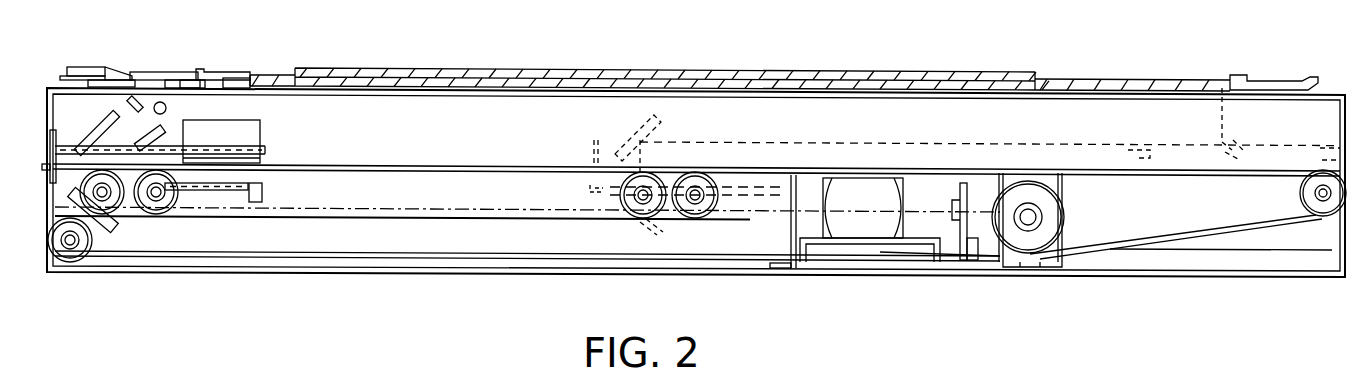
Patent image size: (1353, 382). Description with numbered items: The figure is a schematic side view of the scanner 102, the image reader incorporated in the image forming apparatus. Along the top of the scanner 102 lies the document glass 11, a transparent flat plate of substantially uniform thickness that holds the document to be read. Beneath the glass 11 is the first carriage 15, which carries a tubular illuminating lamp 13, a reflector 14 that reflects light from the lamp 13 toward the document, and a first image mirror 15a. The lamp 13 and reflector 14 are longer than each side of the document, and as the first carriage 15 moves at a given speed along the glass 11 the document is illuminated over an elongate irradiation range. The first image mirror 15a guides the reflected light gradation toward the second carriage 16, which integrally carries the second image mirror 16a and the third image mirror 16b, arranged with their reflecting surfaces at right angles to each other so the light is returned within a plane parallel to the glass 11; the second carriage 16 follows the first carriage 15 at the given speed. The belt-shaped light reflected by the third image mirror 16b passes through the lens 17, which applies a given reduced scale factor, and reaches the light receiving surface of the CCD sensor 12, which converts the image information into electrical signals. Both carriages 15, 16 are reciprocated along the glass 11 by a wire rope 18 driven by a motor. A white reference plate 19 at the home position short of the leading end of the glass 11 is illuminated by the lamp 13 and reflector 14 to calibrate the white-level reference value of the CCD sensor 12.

The document glass 11 is at (412, 76).
The CCD sensor 12 is at (953, 253).
The illuminating lamp 13 is at (162, 103).
The reflector 14 is at (137, 103).
The first carriage 15 is at (265, 150).
The first image mirror 15a is at (140, 212).
The second carriage 16 is at (228, 192).
The second image mirror 16a is at (105, 118).
The third image mirror 16b is at (103, 233).
The lens 17 is at (820, 243).
The wire rope 18 is at (438, 219).
The white reference plate 19 is at (193, 78).
The scanner 102 is at (1285, 113).